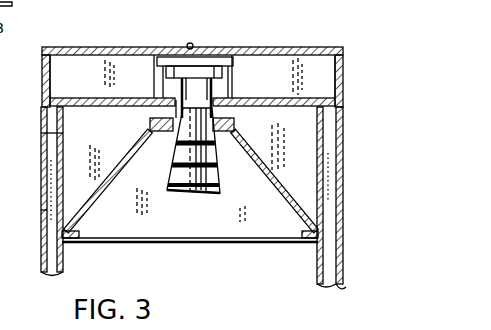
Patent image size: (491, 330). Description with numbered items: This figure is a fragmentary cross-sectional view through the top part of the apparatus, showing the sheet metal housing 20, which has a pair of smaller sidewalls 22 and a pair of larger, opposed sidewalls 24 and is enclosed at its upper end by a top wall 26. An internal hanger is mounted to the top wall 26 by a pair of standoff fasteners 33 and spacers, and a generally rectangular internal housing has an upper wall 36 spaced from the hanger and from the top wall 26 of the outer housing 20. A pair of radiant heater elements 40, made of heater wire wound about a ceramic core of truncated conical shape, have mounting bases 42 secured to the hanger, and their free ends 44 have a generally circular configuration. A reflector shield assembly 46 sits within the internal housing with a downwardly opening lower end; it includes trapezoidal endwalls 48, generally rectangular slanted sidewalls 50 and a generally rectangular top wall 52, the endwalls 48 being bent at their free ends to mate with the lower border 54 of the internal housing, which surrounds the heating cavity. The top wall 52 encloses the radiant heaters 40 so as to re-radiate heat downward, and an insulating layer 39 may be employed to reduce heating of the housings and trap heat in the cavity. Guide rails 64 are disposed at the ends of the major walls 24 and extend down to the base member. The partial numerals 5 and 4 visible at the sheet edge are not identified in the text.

The sheet metal housing 20 is at (349, 57).
The smaller sidewalls 22 is at (75, 67).
The larger sidewalls 24 is at (335, 148).
The top wall 26 is at (283, 50).
The standoff fasteners 33 is at (190, 43).
The upper wall 36 is at (130, 68).
The insulating layer 39 is at (150, 123).
The radiant heater elements 40 is at (220, 172).
The mounting bases 42 is at (200, 65).
The free ends 44 is at (196, 193).
The reflector shield assembly 46 is at (203, 250).
The trapezoidal endwalls 48 is at (165, 239).
The slanted sidewalls 50 is at (93, 222).
The top wall 52 is at (162, 146).
The lower border 54 is at (311, 240).
The guide rails 64 is at (338, 281).
The wall tick (partial numeral) 5 is at (41, 133).
The wall (partial numeral) 4 is at (41, 210).